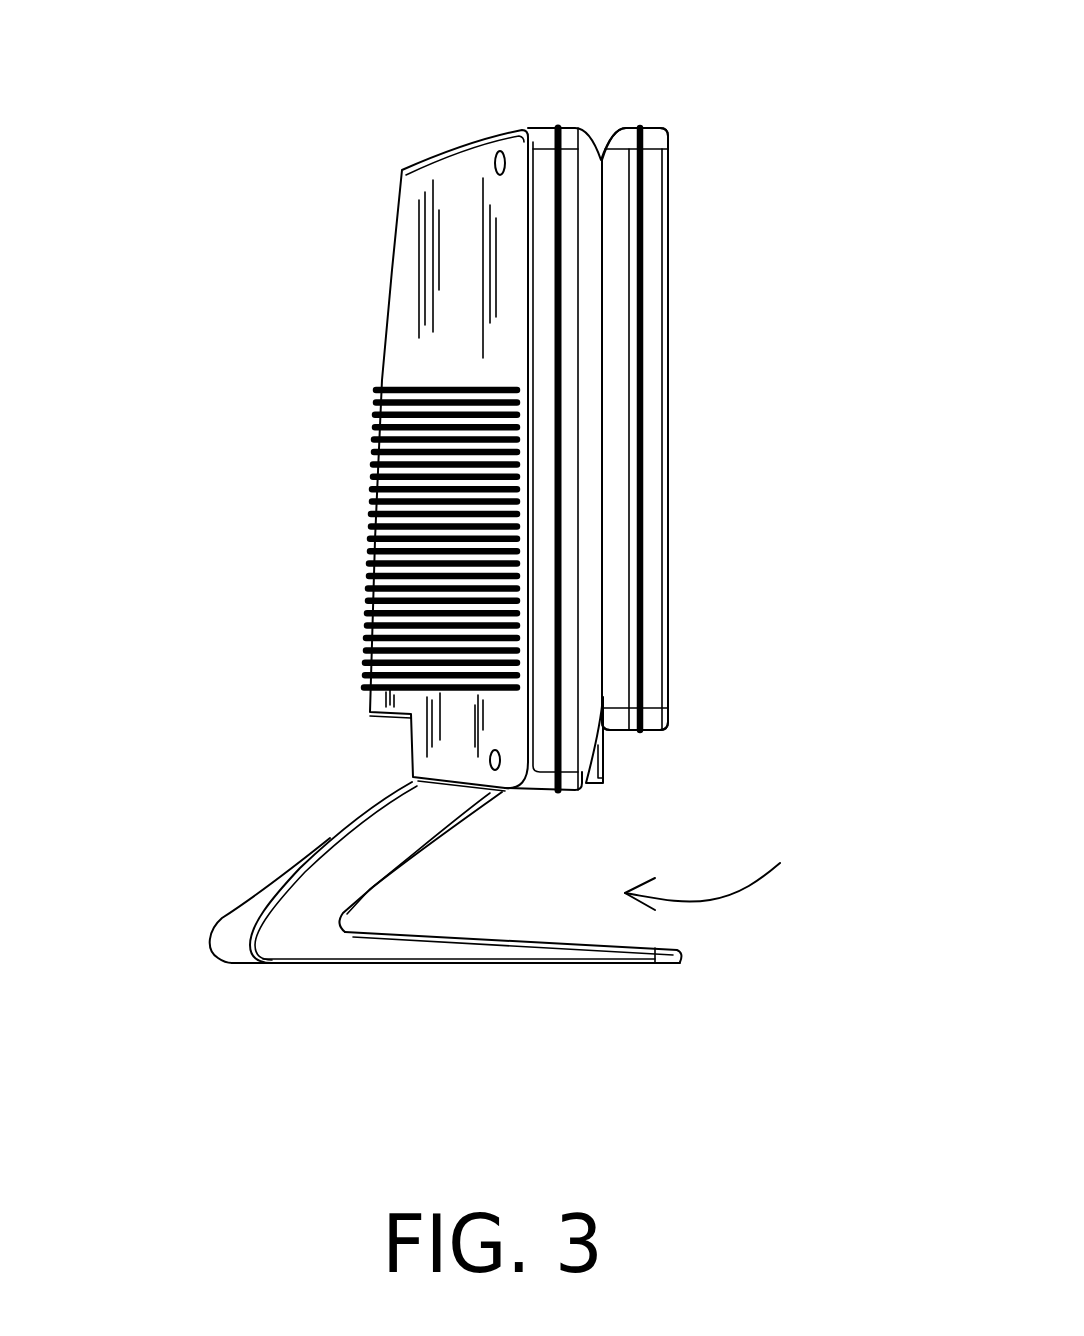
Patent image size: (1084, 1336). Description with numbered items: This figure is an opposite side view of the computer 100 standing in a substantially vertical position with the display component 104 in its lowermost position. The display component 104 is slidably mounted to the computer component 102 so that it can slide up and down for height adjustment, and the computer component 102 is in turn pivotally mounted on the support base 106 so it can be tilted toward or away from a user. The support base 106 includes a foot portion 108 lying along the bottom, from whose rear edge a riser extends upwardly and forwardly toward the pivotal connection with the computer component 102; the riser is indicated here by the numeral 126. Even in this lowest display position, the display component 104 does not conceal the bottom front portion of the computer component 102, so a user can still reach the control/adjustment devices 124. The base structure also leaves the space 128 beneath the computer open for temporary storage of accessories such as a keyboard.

The computer 100 is at (848, 128).
The computer component 102 is at (418, 283).
The display component 104 is at (657, 310).
The support base 106 is at (280, 947).
The foot portion 108 is at (463, 953).
The control/adjustment devices 124 is at (603, 770).
The stand arm 126 is at (340, 852).
The space 128 is at (756, 864).